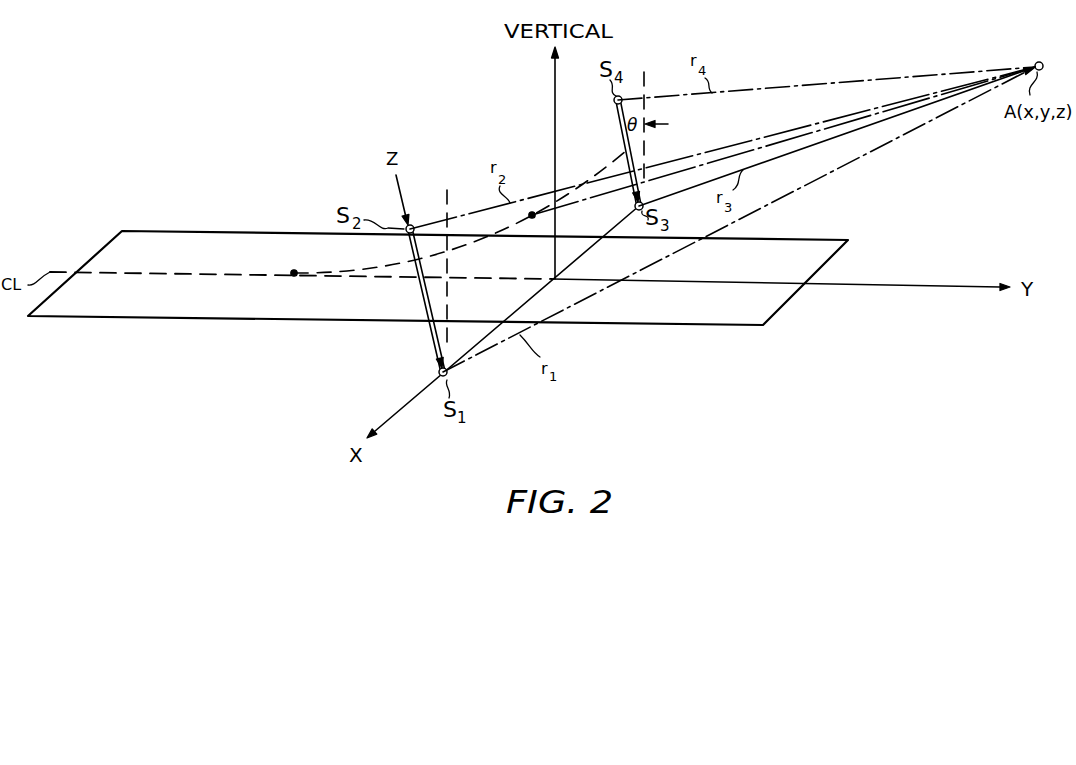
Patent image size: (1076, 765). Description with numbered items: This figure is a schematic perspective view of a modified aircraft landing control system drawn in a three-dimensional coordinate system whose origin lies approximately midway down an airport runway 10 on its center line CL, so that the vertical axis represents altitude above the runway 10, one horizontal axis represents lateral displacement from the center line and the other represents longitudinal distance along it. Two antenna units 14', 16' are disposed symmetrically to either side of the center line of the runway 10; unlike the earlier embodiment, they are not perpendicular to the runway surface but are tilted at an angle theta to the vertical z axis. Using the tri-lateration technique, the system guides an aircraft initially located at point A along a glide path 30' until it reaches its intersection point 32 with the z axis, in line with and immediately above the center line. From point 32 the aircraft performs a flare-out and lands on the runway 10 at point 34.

The airport runway 10 is at (92, 251).
The antenna unit 14' is at (412, 300).
The antenna unit 16' is at (604, 153).
The glide path 30' is at (783, 141).
The intersection point 32 is at (532, 219).
The landing point 34 is at (294, 277).